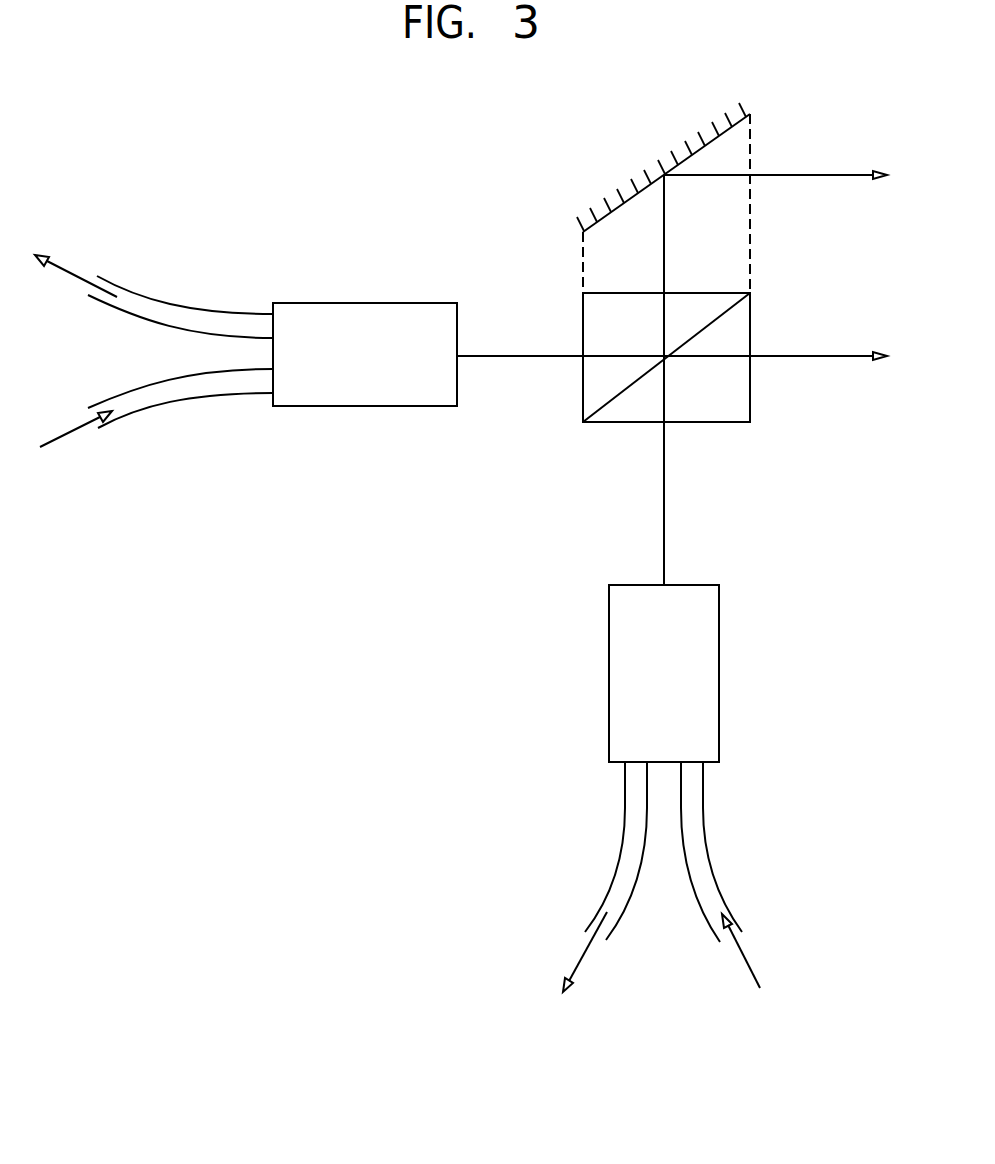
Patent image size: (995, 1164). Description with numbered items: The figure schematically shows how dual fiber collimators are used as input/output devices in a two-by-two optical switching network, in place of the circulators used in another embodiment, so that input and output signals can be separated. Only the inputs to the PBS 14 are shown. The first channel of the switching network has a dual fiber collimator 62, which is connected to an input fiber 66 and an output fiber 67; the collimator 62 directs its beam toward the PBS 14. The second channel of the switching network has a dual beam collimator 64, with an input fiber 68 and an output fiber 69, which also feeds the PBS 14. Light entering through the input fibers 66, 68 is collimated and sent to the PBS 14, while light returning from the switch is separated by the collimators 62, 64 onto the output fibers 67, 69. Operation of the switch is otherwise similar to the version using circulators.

The polarizing beam splitter 14 is at (722, 422).
The dual fiber collimator 62 is at (352, 303).
The dual beam collimator 64 is at (719, 648).
The input fiber 66 is at (192, 405).
The output fiber 67 is at (189, 308).
The input fiber 68 is at (718, 862).
The output fiber 69 is at (618, 857).